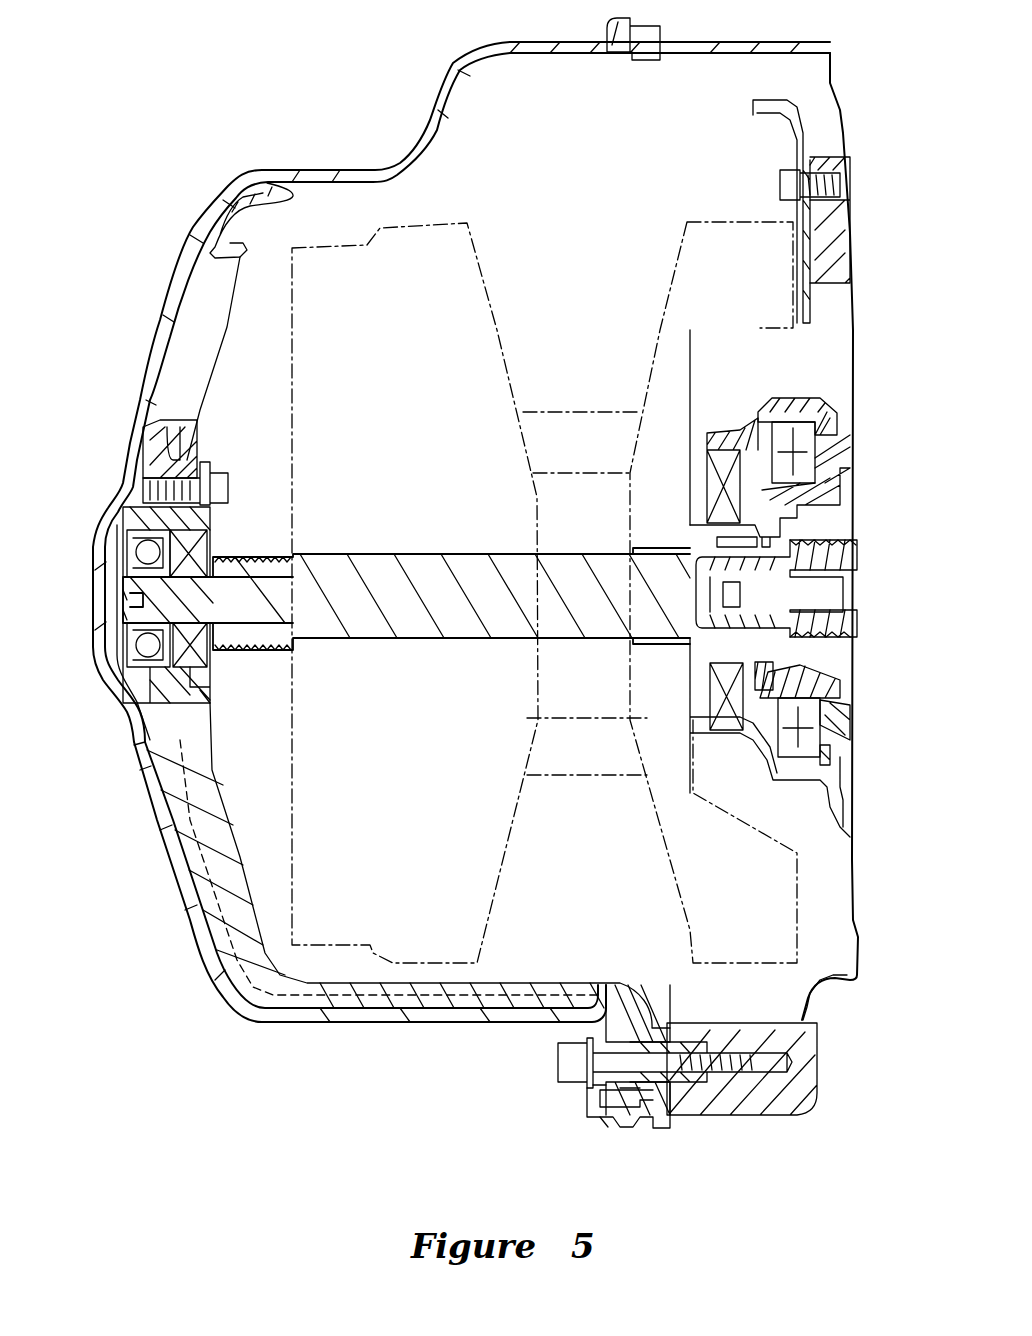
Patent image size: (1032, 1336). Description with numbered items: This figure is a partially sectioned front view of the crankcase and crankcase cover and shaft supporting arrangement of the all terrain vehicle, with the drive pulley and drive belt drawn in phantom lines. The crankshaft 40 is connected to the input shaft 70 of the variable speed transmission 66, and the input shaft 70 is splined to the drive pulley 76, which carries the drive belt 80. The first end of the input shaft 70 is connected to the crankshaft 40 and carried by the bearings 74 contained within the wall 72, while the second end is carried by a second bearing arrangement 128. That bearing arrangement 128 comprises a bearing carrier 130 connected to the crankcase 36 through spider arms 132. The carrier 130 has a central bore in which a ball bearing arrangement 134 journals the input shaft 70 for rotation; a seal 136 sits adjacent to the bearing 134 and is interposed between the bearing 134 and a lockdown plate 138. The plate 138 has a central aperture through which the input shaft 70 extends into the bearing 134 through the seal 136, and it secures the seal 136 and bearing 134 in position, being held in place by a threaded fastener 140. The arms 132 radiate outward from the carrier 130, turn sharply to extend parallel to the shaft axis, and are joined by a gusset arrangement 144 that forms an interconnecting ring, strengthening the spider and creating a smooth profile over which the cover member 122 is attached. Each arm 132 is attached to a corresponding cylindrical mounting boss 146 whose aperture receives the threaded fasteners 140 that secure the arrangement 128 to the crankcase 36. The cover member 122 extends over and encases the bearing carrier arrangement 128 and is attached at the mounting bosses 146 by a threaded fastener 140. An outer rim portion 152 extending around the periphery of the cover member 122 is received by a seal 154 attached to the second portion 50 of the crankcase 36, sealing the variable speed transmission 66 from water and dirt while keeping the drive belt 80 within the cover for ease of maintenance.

The crankcase 36 is at (876, 1003).
The crankshaft 40 is at (827, 637).
The second portion of the crankcase 50 is at (817, 1060).
The variable speed transmission 66 is at (488, 222).
The input shaft 70 is at (465, 560).
The wall 72 is at (787, 393).
The bearings 74 is at (807, 750).
The drive pulley 76 is at (660, 823).
The drive belt 80 is at (607, 430).
The cover member 122 is at (347, 1023).
The bearing arrangement 128 is at (217, 720).
The bearing carrier 130 is at (127, 517).
The spider arms 132 is at (235, 846).
The ball bearing arrangement 134 is at (150, 702).
The seal 136 is at (200, 550).
The lockdown plate 138 is at (203, 667).
The threaded fastener 140 is at (233, 470).
The gusset arrangement 144 is at (270, 197).
The mounting boss 146 is at (623, 1110).
The outer rim portion 152 is at (607, 1113).
The seal 154 is at (650, 65).